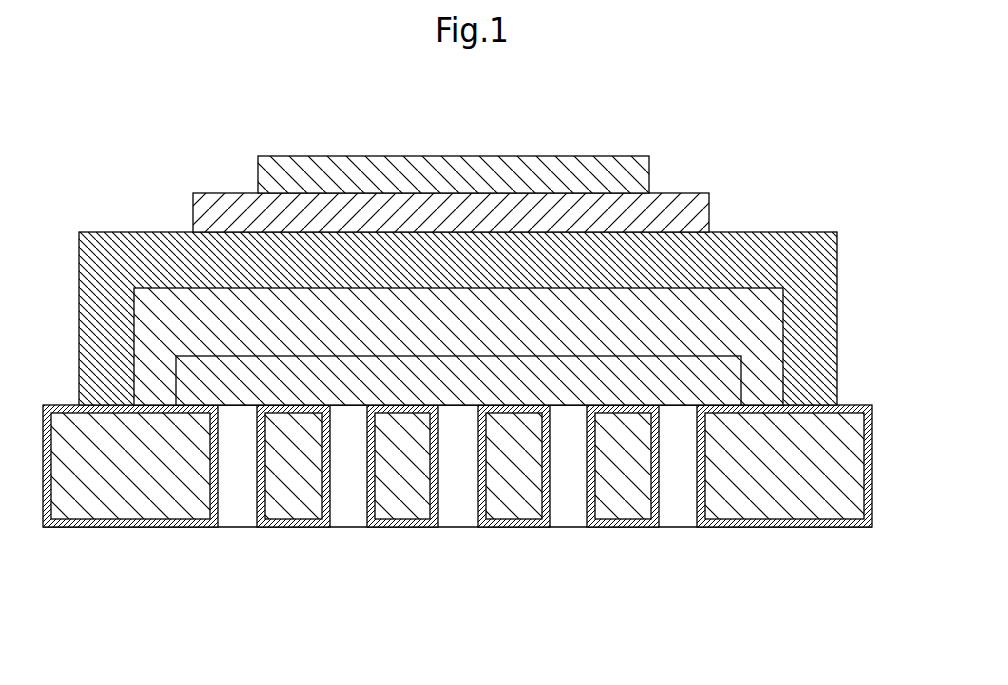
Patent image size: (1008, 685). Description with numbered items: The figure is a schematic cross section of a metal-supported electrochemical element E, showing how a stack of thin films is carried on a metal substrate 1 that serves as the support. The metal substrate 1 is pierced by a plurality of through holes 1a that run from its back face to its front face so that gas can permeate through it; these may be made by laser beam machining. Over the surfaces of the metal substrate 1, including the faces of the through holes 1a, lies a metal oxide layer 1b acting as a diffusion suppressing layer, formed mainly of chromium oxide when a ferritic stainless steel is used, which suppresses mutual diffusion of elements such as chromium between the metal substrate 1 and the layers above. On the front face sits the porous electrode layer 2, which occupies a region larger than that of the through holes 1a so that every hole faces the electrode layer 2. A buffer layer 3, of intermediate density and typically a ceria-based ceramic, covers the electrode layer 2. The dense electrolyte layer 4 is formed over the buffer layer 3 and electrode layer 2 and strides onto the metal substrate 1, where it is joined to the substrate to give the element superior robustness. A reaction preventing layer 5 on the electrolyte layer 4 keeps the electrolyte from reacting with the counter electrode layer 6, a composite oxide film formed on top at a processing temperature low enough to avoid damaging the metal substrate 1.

The metal-supported electrochemical element E is at (178, 98).
The metal substrate 1 is at (775, 528).
The through holes 1a is at (459, 519).
The metal oxide layer 1b is at (723, 528).
The electrode layer 2 is at (728, 373).
The buffer layer 3 is at (756, 320).
The electrolyte layer 4 is at (737, 247).
The reaction preventing layer 5 is at (197, 212).
The counter electrode layer 6 is at (277, 175).